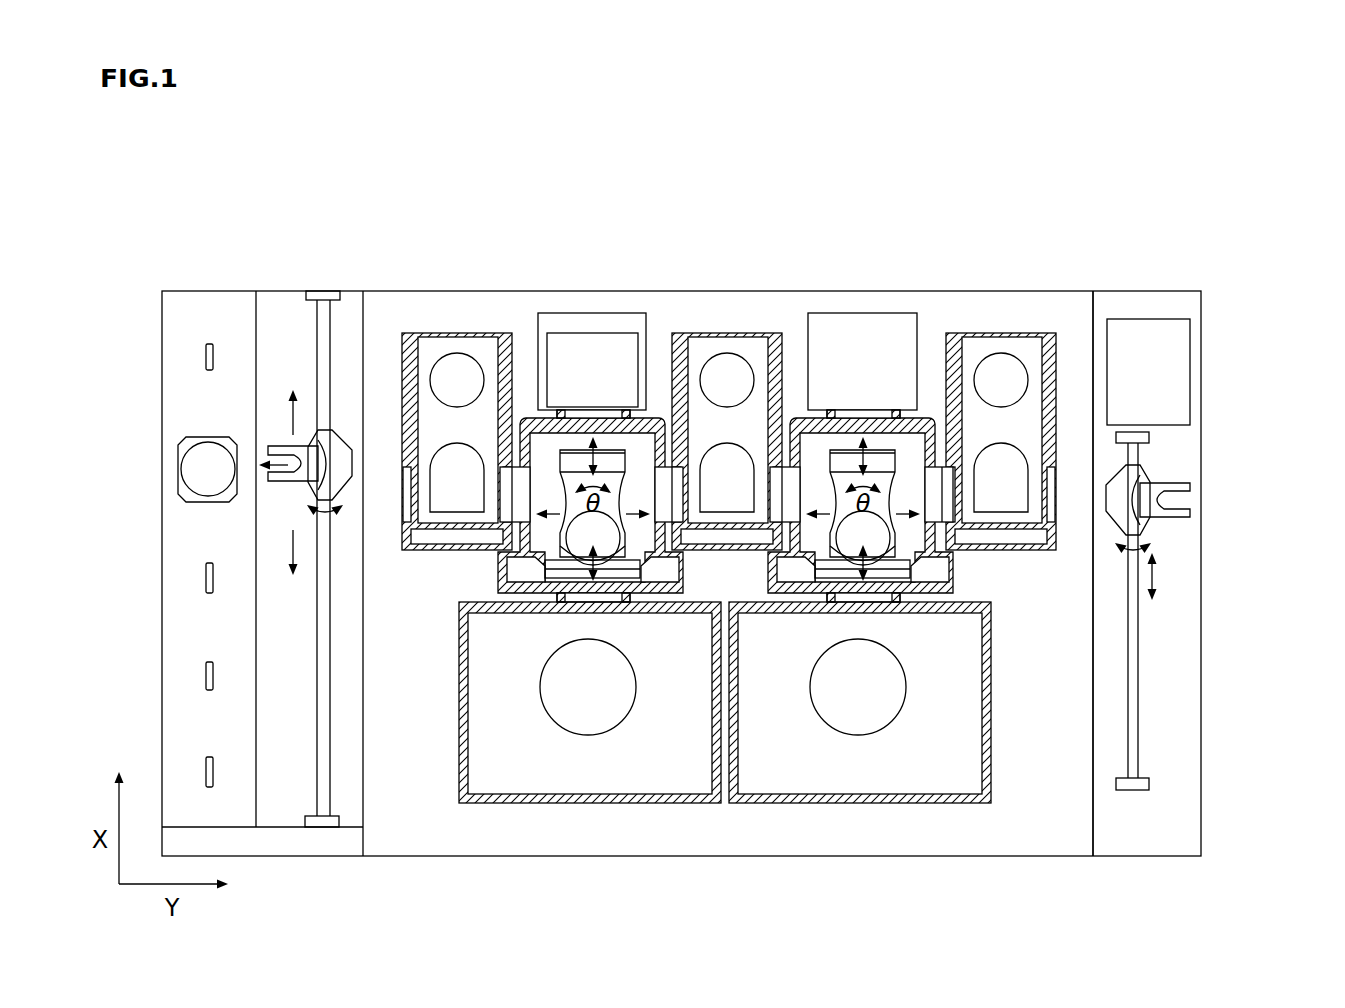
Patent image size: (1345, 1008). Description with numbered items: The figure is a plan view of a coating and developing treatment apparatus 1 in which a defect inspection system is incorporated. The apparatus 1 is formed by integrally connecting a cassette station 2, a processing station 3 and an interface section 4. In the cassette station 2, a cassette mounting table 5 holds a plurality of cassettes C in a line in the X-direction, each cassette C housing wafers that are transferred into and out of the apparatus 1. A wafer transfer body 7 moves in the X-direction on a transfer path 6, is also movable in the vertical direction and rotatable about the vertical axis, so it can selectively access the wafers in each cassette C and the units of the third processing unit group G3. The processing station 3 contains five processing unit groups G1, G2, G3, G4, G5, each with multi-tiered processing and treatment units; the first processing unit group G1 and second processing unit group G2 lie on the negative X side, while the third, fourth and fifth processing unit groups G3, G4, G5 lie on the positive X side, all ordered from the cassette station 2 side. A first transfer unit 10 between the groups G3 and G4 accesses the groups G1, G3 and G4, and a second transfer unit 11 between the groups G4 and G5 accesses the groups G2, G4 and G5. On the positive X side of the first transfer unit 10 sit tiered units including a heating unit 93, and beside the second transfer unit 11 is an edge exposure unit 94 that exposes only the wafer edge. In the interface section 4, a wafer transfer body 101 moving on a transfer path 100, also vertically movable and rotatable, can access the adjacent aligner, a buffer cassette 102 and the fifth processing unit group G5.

The coating and developing treatment apparatus 1 is at (700, 170).
The cassette station 2 is at (284, 286).
The processing station 3 is at (775, 286).
The interface section 4 is at (1136, 287).
The cassette mounting table 5 is at (212, 291).
The transfer path 6 is at (331, 320).
The wafer transfer body 7 is at (283, 482).
The first transfer unit 10 is at (627, 545).
The second transfer unit 11 is at (897, 545).
The heating unit 93 is at (598, 313).
The edge exposure unit 94 is at (890, 313).
The transfer path 100 is at (1140, 790).
The wafer transfer body 101 is at (1162, 485).
The buffer cassette 102 is at (1190, 352).
The first processing unit group G1 is at (585, 810).
The second processing unit group G2 is at (852, 810).
The third processing unit group G3 is at (458, 328).
The fourth processing unit group G4 is at (726, 328).
The fifth processing unit group G5 is at (1002, 328).
The cassette C is at (186, 437).